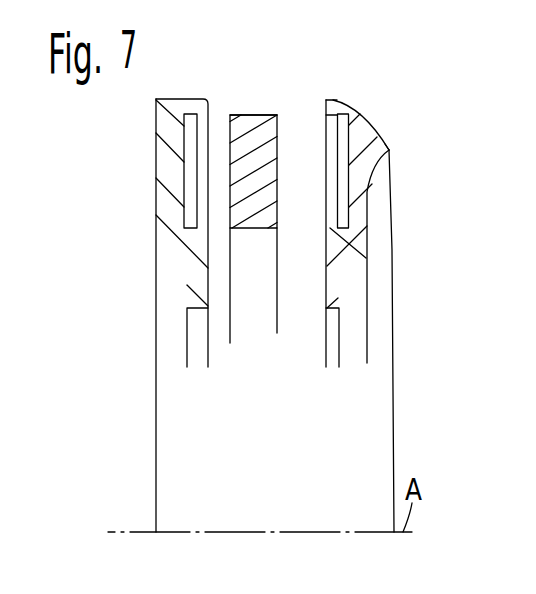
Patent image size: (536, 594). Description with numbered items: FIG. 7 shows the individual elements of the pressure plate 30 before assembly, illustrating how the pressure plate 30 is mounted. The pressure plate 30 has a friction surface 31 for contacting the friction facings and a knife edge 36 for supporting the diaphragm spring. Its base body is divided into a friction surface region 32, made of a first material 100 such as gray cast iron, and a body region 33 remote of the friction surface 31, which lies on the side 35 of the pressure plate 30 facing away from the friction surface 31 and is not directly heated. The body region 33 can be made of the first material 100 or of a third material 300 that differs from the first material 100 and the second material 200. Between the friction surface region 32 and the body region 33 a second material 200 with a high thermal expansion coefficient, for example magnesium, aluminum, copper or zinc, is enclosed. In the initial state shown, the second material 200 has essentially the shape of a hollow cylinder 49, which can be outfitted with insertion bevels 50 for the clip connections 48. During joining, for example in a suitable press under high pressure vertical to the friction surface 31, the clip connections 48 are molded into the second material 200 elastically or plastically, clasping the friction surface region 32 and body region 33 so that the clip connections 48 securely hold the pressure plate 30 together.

The pressure plate 30 is at (124, 346).
The friction surface 31 is at (156, 120).
The friction surface region 32 is at (156, 99).
The body region 33 is at (358, 120).
The side facing away from the friction surface 35 is at (405, 114).
The knife edge 36 is at (389, 150).
The clip connections 48 is at (198, 113).
The hollow cylinder 49 is at (250, 213).
The insertion bevels 50 is at (270, 115).
The first material 100 is at (167, 177).
The second material 200 is at (250, 125).
The third material 300 is at (363, 242).